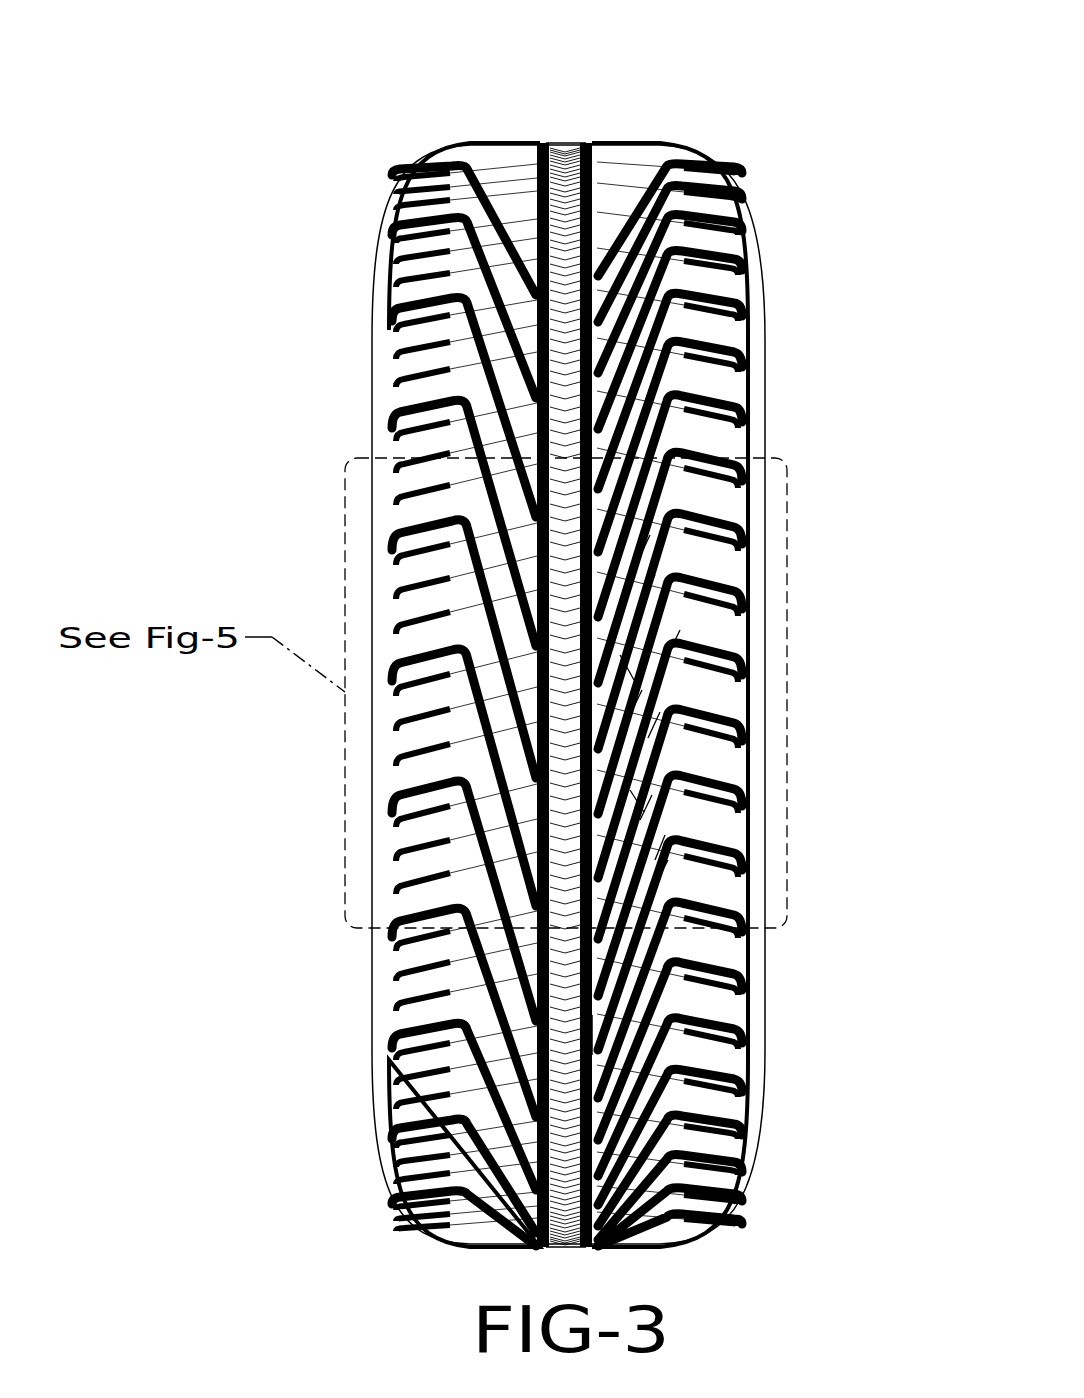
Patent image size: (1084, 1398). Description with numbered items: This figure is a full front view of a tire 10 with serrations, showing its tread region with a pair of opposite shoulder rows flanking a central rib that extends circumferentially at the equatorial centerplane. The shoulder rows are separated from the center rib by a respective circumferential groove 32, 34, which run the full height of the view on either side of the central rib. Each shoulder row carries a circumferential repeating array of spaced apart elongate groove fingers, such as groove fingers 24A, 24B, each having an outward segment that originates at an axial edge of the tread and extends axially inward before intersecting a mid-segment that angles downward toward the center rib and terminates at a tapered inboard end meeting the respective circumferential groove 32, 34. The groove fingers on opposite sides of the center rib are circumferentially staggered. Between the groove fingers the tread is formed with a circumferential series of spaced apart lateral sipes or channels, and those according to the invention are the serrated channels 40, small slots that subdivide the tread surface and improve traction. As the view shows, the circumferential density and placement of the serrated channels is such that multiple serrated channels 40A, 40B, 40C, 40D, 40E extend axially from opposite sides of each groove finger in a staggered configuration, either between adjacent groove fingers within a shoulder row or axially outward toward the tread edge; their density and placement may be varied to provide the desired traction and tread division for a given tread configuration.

The tire 10 is at (260, 124).
The groove finger 24A is at (642, 553).
The groove finger 24B is at (635, 702).
The circumferential groove 32 is at (593, 1033).
The circumferential groove 34 is at (542, 1078).
The serrated channel 40 is at (656, 848).
The serrated channel 40A is at (637, 800).
The serrated channel 40B is at (653, 725).
The serrated channel 40C is at (627, 667).
The serrated channel 40D is at (673, 643).
The serrated channel 40E is at (648, 588).